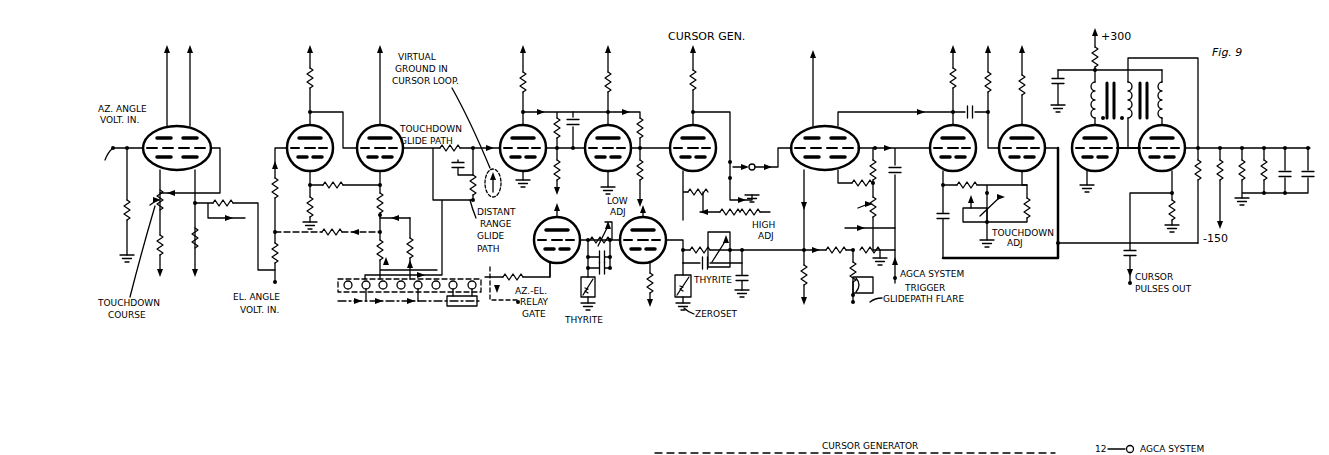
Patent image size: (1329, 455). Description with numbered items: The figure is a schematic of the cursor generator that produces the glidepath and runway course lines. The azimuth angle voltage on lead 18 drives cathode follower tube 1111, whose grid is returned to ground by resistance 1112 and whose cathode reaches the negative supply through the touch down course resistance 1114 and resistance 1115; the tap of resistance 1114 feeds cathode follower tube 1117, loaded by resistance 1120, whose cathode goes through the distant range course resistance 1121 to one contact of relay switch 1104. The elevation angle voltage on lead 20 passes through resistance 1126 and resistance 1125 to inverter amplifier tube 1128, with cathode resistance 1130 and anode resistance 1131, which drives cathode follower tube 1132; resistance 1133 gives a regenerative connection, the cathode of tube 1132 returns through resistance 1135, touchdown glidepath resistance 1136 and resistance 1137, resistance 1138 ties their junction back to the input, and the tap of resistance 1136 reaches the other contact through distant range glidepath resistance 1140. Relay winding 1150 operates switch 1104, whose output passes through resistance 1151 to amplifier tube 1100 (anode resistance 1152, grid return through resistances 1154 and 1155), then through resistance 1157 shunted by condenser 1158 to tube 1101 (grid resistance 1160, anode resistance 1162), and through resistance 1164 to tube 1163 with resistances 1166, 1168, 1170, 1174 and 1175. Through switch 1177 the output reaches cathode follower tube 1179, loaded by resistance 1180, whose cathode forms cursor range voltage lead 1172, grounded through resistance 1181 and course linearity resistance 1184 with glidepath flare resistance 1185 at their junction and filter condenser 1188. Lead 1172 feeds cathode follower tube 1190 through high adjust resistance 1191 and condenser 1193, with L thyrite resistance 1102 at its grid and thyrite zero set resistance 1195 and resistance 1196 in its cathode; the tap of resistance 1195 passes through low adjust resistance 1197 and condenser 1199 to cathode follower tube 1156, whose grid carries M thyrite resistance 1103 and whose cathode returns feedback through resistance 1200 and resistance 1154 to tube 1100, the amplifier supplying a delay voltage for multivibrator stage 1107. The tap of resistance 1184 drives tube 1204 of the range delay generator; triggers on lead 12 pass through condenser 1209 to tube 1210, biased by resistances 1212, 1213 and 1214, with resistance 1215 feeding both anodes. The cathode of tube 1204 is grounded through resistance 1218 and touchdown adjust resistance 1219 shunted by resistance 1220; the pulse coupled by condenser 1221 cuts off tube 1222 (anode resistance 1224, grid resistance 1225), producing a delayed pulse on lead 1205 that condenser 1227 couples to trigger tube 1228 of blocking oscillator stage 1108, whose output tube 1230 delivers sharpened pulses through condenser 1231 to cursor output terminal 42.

The lead 18 is at (105, 164).
The lead 20 is at (278, 283).
The cursor output terminal 42 is at (1129, 283).
The input lead 12 is at (895, 280).
The D.-C. amplifier tube 1100 is at (510, 130).
The amplifier tube 1101 is at (611, 125).
The "L" thyrite resistance 1102 is at (691, 290).
The "M" thyrite resistance 1103 is at (596, 296).
The single pole double throw relay switch 1104 is at (366, 305).
The delay multivibrator stage 1107 is at (1024, 125).
The blocking oscillator stage 1108 is at (1172, 128).
The cathode follower tube 1111 is at (144, 136).
The resistance 1112 is at (127, 214).
The "touch down course" resistance 1114 is at (185, 191).
The resistance 1115 is at (166, 264).
The cathode follower tube 1117 is at (190, 126).
The resistance 1120 is at (199, 252).
The adjustable "distant range course" resistance 1121 is at (232, 226).
The resistance 1125 is at (273, 192).
The resistance 1126 is at (278, 254).
The inverter amplifier tube 1128 is at (300, 127).
The resistance 1130 is at (312, 210).
The resistance 1131 is at (314, 78).
The cathode follower tube 1132 is at (383, 127).
The resistance 1133 is at (344, 183).
The resistance 1135 is at (378, 210).
The "touchdown glidepath" resistance 1136 is at (384, 222).
The resistance 1137 is at (328, 238).
The resistance 1138 is at (338, 234).
The adjustable "distant range glidepath" resistance 1140 is at (424, 248).
The relay winding 1150 is at (504, 287).
The resistance 1151 is at (451, 166).
The resistance 1152 is at (528, 76).
The resistance 1154 is at (470, 188).
The resistance 1155 is at (518, 306).
The cathode follower tube 1156 is at (552, 222).
The resistance 1157 is at (557, 115).
The condenser 1158 is at (574, 117).
The resistance 1160 is at (562, 172).
The resistance 1162 is at (612, 74).
The amplifying tube 1163 is at (697, 125).
The resistance 1164 is at (642, 124).
The resistance 1166 is at (655, 164).
The resistance 1168 is at (697, 72).
The resistance 1170 is at (662, 188).
The "cursor range voltage" lead 1172 is at (760, 293).
The resistance 1174 is at (712, 226).
The resistance 1175 is at (700, 195).
The single pole double throw switch 1177 is at (765, 144).
The cathode follower tube 1179 is at (811, 120).
The resistance 1180 is at (807, 270).
The resistance 1181 is at (798, 243).
The "course linearity" resistance 1184 is at (890, 251).
The adjustable "glidepath flare" resistance 1185 is at (850, 280).
The condenser 1188 is at (748, 279).
The cathode follower tube 1190 is at (648, 229).
The "high adjust" resistance 1191 is at (735, 238).
The condenser 1193 is at (725, 262).
The "thyrite zero set" resistance 1195 is at (663, 294).
The resistance 1196 is at (682, 310).
The "low adjust" resistance 1197 is at (600, 234).
The condenser 1199 is at (598, 272).
The resistance 1200 is at (542, 279).
The tube 1204 is at (948, 125).
The lead 1205 is at (1060, 252).
The condenser 1209 is at (896, 165).
The tube 1210 is at (853, 134).
The resistance 1212 is at (857, 172).
The resistance 1213 is at (857, 224).
The resistance 1214 is at (860, 207).
The voltage dropping resistance 1215 is at (950, 80).
The resistance 1218 is at (970, 188).
The "touchdown adjust" resistance 1219 is at (998, 196).
The resistance 1220 is at (1022, 212).
The condenser 1221 is at (969, 108).
The tube 1222 is at (1044, 137).
The resistance 1224 is at (1026, 84).
The resistance 1225 is at (987, 80).
The condenser 1227 is at (946, 222).
The trigger tube 1228 is at (1060, 96).
The output tube 1230 is at (1185, 136).
The condenser 1231 is at (1136, 254).